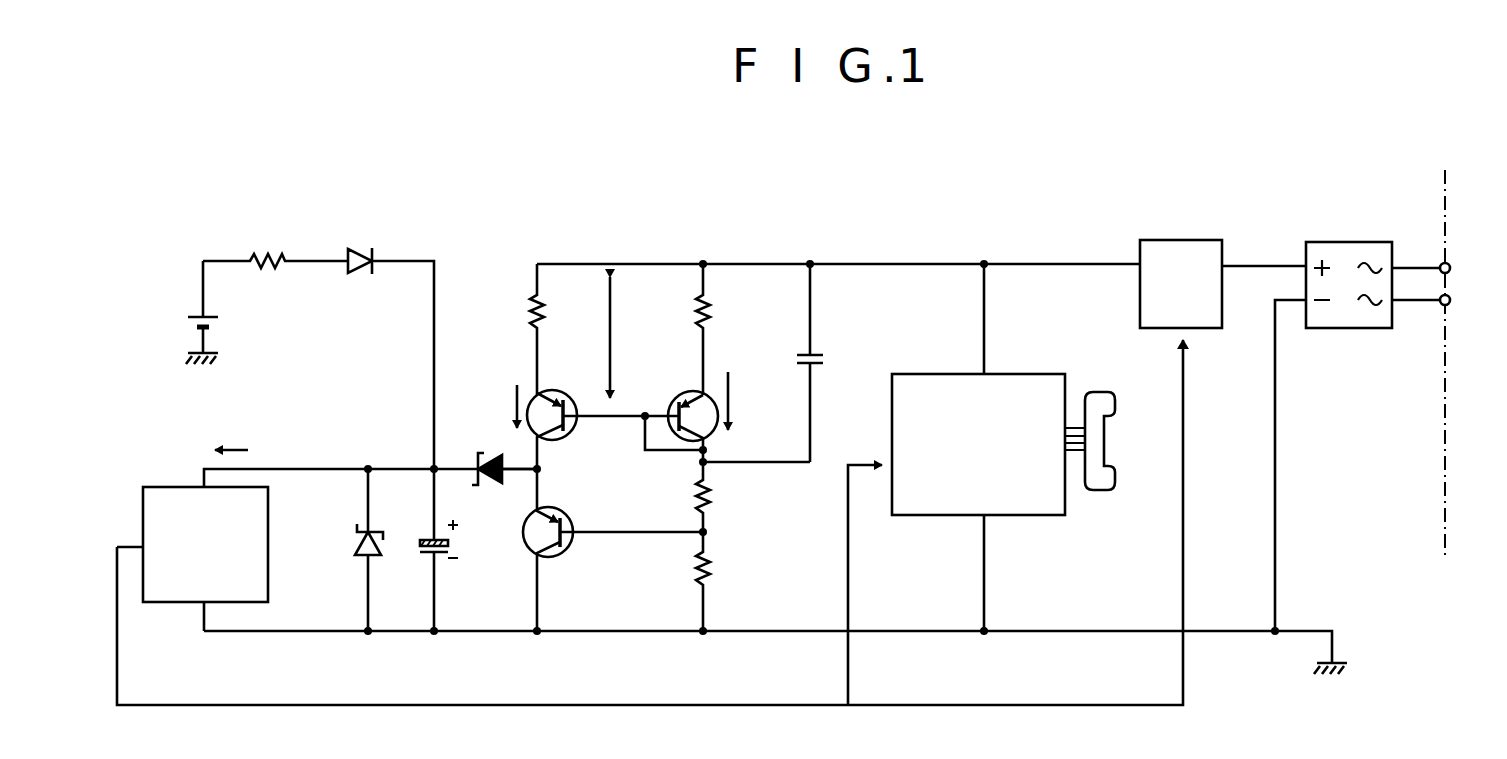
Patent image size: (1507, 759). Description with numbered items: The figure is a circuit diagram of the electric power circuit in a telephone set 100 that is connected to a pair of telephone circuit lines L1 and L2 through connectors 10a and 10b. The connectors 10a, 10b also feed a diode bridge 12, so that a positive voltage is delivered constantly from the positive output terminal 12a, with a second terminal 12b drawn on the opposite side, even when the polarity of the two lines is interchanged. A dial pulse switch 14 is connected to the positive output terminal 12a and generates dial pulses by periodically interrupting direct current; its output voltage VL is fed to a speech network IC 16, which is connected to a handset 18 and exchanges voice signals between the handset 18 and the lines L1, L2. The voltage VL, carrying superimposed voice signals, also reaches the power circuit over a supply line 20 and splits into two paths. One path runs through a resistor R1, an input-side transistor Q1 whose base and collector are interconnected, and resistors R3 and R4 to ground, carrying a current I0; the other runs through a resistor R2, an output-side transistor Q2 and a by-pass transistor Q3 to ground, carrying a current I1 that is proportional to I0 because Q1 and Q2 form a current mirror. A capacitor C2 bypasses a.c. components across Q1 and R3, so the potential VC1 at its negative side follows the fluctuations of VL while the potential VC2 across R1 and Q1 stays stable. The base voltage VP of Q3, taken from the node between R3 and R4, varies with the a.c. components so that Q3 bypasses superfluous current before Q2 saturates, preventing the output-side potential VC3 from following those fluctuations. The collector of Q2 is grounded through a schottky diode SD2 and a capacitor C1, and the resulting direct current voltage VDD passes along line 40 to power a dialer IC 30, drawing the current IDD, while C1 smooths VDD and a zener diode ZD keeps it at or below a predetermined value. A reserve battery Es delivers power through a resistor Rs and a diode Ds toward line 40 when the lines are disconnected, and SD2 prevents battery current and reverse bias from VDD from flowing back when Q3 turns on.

The telephone set 100 is at (874, 246).
The supply line 20 is at (630, 264).
The dialer IC 30 is at (170, 486).
The voltage supply line 40 is at (314, 468).
The dial pulse switch 14 is at (1176, 240).
The speech network IC 16 is at (1016, 374).
The handset 18 is at (1106, 440).
The diode bridge 12 is at (1344, 242).
The positive output terminal 12a is at (1257, 266).
The bridge output terminal 12b is at (1290, 304).
The connector 10a is at (1448, 264).
The connector 10b is at (1448, 308).
The reserve battery Es is at (188, 326).
The resistor Rs is at (270, 254).
The diode Ds is at (360, 251).
The zener diode ZD is at (357, 545).
The capacitor C1 is at (452, 545).
The capacitor C2 is at (826, 360).
The schottky diode SD2 is at (480, 457).
The resistor R1 is at (712, 314).
The resistor R2 is at (546, 314).
The resistor R3 is at (712, 490).
The resistor R4 is at (714, 572).
The input-side transistor Q1 is at (688, 394).
The output-side transistor Q2 is at (556, 438).
The by-pass transistor Q3 is at (556, 556).
The potential at negative side of capacitor C2 VC1 is at (700, 465).
The potential across resistor R1 and transistor Q1 VC2 is at (613, 318).
The output-side potential VC3 is at (537, 480).
The base voltage of transistor Q3 VP is at (712, 532).
The supply voltage VDD is at (364, 453).
The supply current IDD is at (253, 450).
The supply voltage VL is at (1064, 250).
The current I0 is at (722, 393).
The current I1 is at (510, 395).
The telephone circuit line L1 is at (1468, 268).
The telephone circuit line L2 is at (1468, 300).